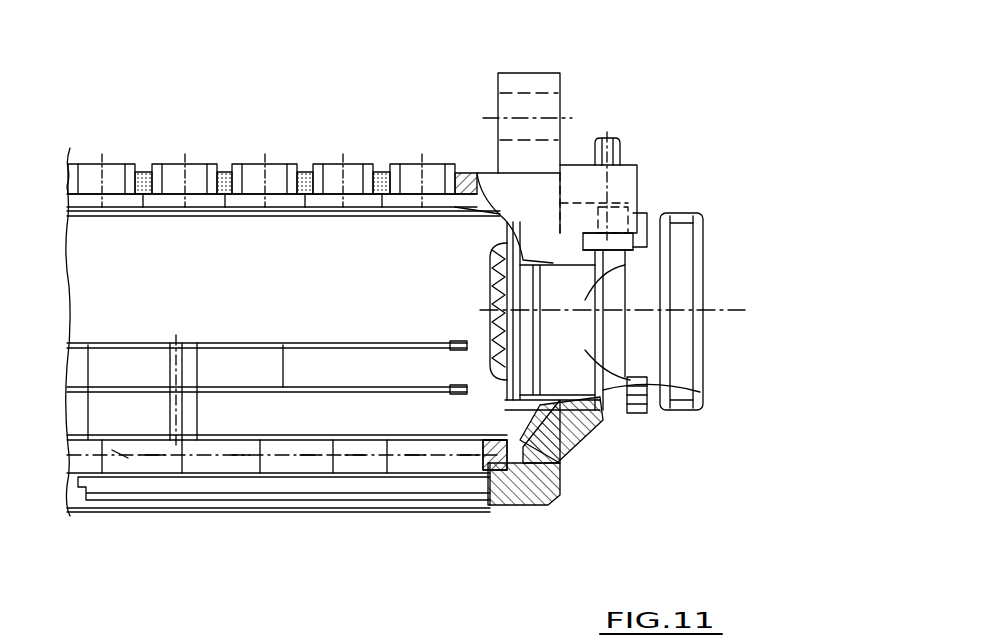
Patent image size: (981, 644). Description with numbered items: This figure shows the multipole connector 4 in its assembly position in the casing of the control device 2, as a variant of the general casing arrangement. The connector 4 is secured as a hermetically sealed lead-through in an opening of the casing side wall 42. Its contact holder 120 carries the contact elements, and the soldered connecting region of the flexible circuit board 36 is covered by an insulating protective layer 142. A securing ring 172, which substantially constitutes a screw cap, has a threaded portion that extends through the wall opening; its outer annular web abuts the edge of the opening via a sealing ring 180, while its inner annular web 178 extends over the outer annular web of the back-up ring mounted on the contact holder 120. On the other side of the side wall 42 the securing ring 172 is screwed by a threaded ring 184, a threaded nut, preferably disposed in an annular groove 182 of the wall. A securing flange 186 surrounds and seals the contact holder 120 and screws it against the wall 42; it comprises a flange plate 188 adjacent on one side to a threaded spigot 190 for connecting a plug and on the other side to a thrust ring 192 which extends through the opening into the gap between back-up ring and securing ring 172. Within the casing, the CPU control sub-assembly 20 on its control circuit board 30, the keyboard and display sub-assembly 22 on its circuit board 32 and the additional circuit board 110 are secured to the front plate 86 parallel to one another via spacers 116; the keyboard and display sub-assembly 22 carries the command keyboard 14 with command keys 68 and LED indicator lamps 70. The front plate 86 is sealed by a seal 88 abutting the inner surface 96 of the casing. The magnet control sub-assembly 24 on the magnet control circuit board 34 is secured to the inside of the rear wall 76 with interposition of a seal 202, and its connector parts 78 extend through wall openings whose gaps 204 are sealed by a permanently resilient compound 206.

The control device 2 is at (160, 102).
The multipole connector 4 is at (718, 232).
The command keyboard 14 is at (165, 470).
The CPU control sub-assembly 20 is at (314, 386).
The keyboard and display sub-assembly 22 is at (386, 446).
The magnet control sub-assembly 24 is at (115, 190).
The CPU control circuit board 30 is at (218, 372).
The keyboard and display circuit board 32 is at (95, 435).
The magnet control circuit board 34 is at (247, 214).
The flexible circuit board 36 is at (507, 233).
The side wall 42 is at (555, 442).
The command keys 68 is at (227, 463).
The LED indicator lamps 70 is at (307, 443).
The rear wall 76 is at (465, 172).
The connector parts 78 is at (328, 162).
The front plate 86 is at (528, 506).
The seal 88 is at (488, 505).
The inner surface 96 is at (560, 490).
The additional circuit board 110 is at (288, 344).
The spacers 116 is at (173, 362).
The contact holder 120 is at (527, 322).
The insulating protective layer 142 is at (490, 280).
The securing ring 172 is at (630, 368).
The inner annular web 178 is at (500, 382).
The sealing ring 180 is at (515, 398).
The annular groove 182 is at (615, 405).
The threaded ring 184 is at (597, 414).
The securing flange 186 is at (648, 262).
The flange plate 188 is at (632, 323).
The threaded spigot 190 is at (690, 262).
The thrust ring 192 is at (632, 358).
The seal 202 is at (425, 211).
The gaps 204 is at (228, 166).
The permanently resilient compound 206 is at (383, 166).